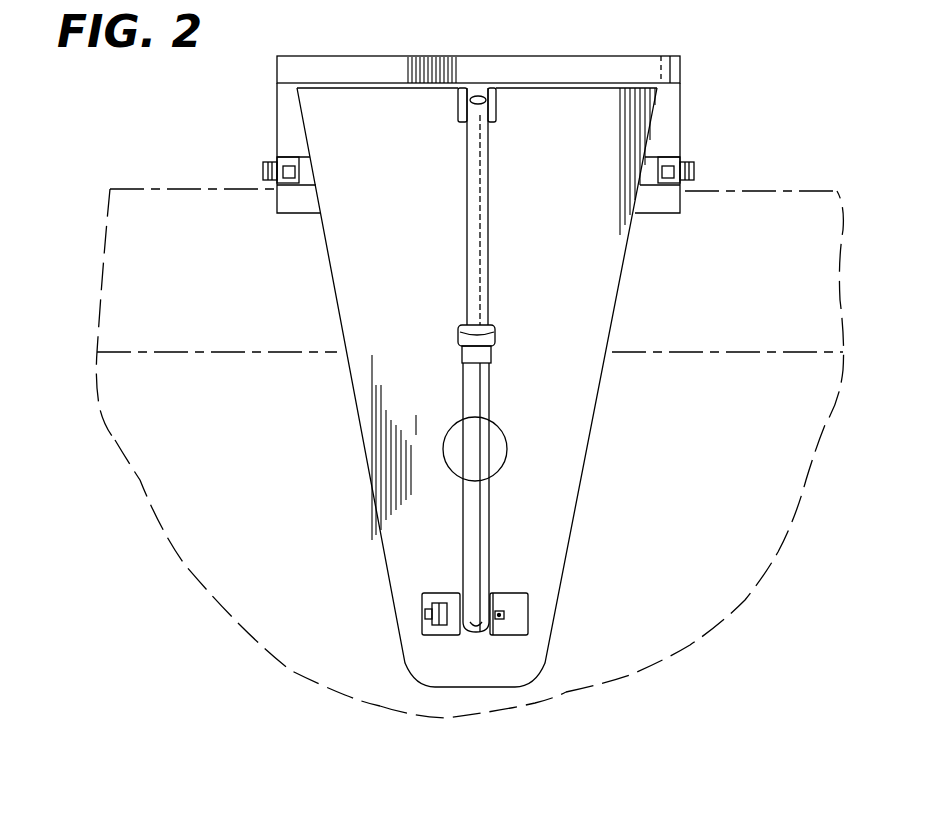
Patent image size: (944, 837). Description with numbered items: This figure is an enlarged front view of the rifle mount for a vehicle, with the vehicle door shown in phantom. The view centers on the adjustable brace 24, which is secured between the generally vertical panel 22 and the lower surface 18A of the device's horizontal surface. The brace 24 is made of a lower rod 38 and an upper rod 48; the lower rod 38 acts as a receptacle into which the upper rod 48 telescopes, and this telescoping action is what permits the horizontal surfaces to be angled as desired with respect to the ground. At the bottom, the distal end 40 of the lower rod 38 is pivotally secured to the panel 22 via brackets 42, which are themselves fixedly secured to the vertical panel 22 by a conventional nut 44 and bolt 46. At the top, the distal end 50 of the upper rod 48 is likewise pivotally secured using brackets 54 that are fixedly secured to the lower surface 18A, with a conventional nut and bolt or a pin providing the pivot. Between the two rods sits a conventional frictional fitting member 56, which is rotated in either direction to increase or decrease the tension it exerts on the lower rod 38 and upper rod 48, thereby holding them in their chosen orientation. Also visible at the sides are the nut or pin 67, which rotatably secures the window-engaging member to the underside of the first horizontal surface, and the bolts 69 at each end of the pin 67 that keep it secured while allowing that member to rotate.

The lower surface 18A is at (351, 93).
The vertical panel 22 is at (572, 323).
The adjustable brace 24 is at (447, 273).
The lower rod 38 is at (480, 402).
The distal end 40 is at (477, 615).
The brackets 42 is at (422, 620).
The nut 44 is at (499, 615).
The bolt 46 is at (443, 603).
The upper rod 48 is at (478, 222).
The distal end 50 is at (478, 118).
The brackets 54 is at (460, 90).
The frictional fitting member 56 is at (483, 338).
The nut or pin 67 is at (297, 157).
The bolts 69 is at (263, 172).